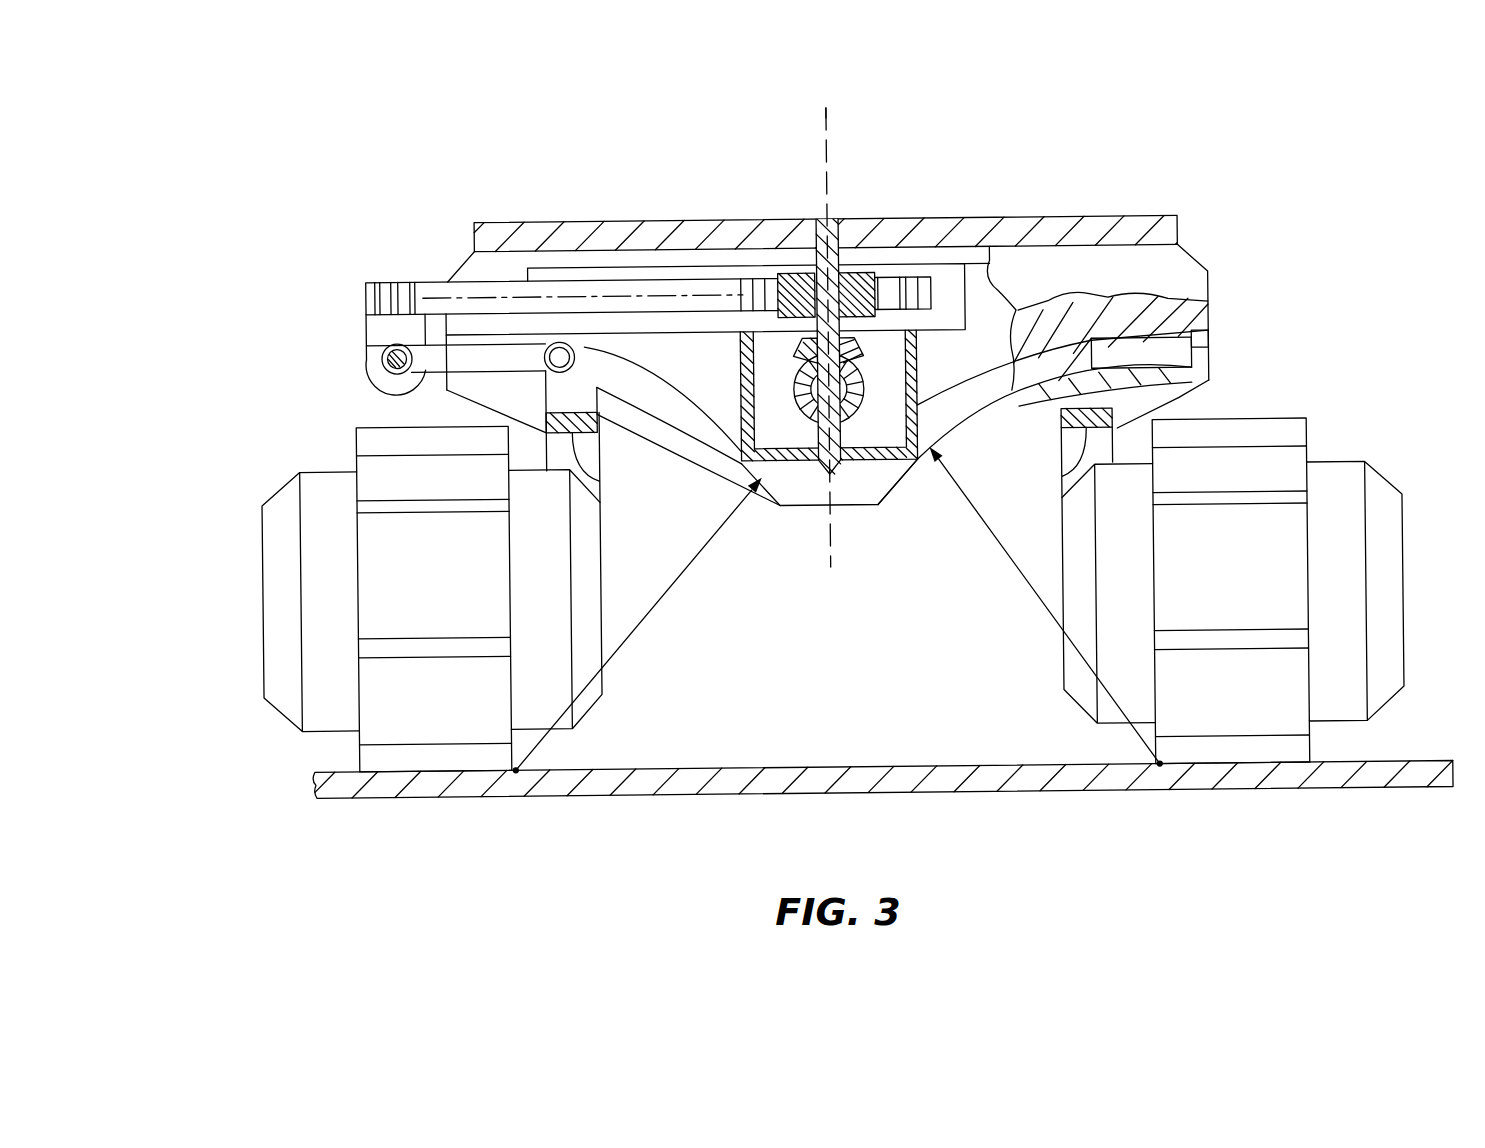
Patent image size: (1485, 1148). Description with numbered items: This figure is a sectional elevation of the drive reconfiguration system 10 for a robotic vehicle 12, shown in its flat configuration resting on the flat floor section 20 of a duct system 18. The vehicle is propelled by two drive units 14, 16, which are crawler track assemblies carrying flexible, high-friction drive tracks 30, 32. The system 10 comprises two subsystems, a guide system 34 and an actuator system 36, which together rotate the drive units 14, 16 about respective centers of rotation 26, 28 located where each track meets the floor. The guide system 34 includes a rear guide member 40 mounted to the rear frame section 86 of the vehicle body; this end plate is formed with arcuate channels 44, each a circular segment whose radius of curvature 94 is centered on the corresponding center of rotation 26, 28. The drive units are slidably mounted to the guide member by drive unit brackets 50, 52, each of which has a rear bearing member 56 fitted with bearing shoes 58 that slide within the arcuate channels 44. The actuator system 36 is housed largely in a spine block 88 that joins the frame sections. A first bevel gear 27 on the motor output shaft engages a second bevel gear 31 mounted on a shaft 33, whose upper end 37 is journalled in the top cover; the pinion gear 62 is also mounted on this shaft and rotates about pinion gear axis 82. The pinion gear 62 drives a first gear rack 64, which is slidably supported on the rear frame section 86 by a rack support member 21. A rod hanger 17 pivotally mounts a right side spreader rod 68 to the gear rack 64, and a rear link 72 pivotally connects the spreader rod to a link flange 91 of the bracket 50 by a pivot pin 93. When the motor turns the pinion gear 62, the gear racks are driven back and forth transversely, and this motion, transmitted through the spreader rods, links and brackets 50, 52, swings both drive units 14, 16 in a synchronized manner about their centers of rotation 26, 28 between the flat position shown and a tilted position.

The drive reconfiguration system 10 is at (270, 132).
The robotic vehicle 12 is at (560, 205).
The drive unit 14 is at (262, 598).
The drive unit 16 is at (1402, 590).
The rod hanger 17 is at (368, 332).
The duct system 18 is at (338, 814).
The flat floor section 20 is at (605, 798).
The rack support member 21 is at (657, 265).
The center of rotation 26 is at (516, 771).
The first bevel gear 27 is at (866, 388).
The center of rotation 28 is at (1155, 765).
The drive track 30 is at (357, 436).
The second bevel gear 31 is at (792, 355).
The drive track 32 is at (1308, 430).
The shaft 33 is at (820, 440).
The guide system 34 is at (1232, 322).
The actuator system 36 is at (350, 290).
The upper end of shaft 37 is at (822, 215).
The rear guide member 40 is at (1196, 268).
The arcuate channel 44 is at (686, 408).
The drive unit bracket 50 is at (602, 473).
The drive unit bracket 52 is at (1062, 477).
The rear bearing member 56 is at (480, 410).
The bearing shoe 58 is at (1195, 347).
The pinion gear 62 is at (858, 273).
The first gear rack 64 is at (393, 280).
The right side spreader rod 68 is at (388, 370).
The rear link 72 is at (389, 357).
The pinion gear axis 82 is at (831, 112).
The rear frame section 86 is at (1020, 300).
The spine block 88 is at (919, 363).
The link flange 91 is at (607, 376).
The pivot pin 93 is at (600, 346).
The radius of curvature 94 is at (683, 573).